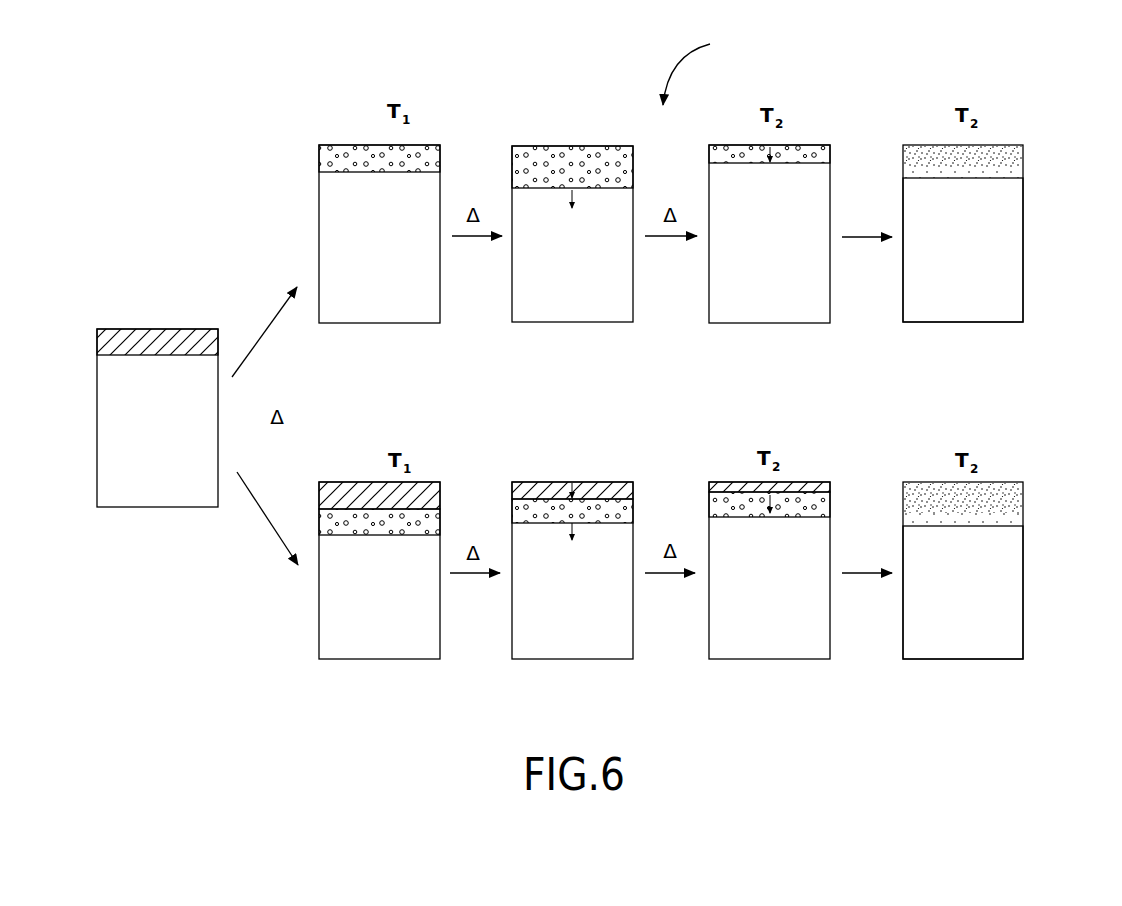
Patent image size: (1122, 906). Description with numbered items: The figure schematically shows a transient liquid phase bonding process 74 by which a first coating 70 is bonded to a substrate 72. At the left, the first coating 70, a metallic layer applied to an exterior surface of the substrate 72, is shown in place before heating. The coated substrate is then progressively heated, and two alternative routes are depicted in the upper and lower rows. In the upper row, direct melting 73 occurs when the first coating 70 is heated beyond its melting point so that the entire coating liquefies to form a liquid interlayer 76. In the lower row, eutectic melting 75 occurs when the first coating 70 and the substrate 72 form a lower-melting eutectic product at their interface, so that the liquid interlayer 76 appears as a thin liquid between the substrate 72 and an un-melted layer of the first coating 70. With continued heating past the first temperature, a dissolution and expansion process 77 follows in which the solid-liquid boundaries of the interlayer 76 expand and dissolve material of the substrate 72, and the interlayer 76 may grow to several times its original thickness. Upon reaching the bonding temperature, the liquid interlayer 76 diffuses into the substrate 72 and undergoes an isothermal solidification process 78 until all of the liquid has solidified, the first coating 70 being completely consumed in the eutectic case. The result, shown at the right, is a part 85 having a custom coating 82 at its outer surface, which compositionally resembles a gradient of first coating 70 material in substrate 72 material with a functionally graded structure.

The first coating 70 is at (185, 330).
The substrate 72 is at (203, 450).
The direct melting 73 is at (258, 340).
The TLP bonding process 74 is at (700, 66).
The eutectic melting 75 is at (270, 518).
The liquid interlayer 76 is at (433, 165).
The dissolution/expansion process 77 is at (465, 238).
The isothermal solidification process 78 is at (852, 240).
The custom coating 82 is at (1031, 145).
The part 85 is at (1010, 297).